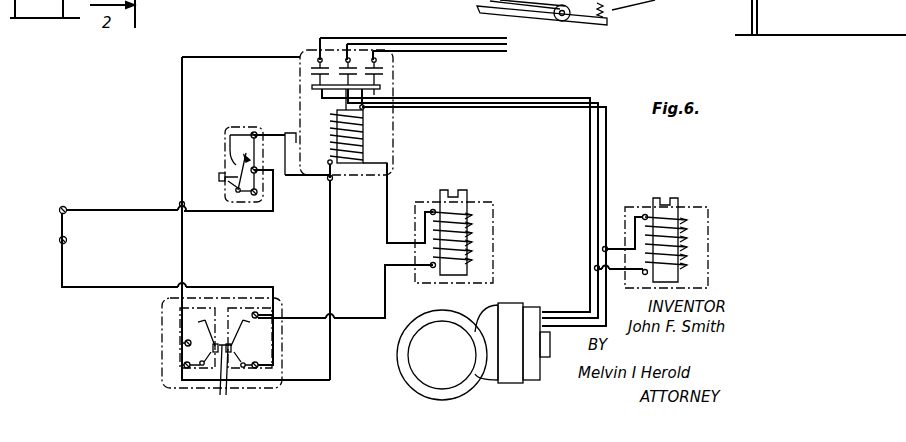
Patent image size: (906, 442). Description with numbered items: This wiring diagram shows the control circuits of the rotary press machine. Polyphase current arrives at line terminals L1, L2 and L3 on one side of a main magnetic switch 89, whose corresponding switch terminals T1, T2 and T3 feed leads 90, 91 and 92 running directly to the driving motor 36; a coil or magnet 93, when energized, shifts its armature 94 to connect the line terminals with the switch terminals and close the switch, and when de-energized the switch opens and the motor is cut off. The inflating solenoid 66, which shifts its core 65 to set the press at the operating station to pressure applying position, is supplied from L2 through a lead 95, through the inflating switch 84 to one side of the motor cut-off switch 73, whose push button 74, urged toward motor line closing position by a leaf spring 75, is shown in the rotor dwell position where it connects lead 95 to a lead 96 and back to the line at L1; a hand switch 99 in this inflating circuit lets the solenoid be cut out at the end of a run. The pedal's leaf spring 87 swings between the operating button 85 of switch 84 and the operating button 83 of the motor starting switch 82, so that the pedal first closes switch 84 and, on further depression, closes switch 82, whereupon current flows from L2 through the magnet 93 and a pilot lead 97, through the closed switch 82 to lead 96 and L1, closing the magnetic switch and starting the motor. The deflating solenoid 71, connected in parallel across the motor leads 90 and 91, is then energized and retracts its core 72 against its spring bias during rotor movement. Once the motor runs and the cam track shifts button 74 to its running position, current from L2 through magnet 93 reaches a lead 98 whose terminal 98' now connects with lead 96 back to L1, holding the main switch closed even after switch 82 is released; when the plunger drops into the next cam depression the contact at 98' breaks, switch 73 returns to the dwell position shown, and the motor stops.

The driving motor 36 is at (512, 312).
The core 65 is at (453, 200).
The inflating solenoid 66 is at (470, 243).
The deflating solenoid 71 is at (690, 236).
The core 72 is at (661, 198).
The switch 73 is at (237, 152).
The push button 74 is at (220, 176).
The leaf spring 75 is at (238, 162).
The switch 82 is at (197, 315).
The operating button 83 is at (212, 348).
The switch 84 is at (248, 338).
The operating button 85 is at (274, 359).
The leaf spring 87 is at (218, 372).
The main magnetic switch 89 is at (396, 77).
The lead 90 is at (536, 99).
The lead 91 is at (569, 104).
The lead 92 is at (588, 109).
The magnet 93 is at (364, 136).
The armature 94 is at (350, 164).
The lead 95 is at (274, 198).
The lead 96 is at (181, 93).
The pilot lead 97 is at (330, 248).
The lead 98 is at (292, 140).
The terminal 98' is at (244, 143).
The hand switch 99 is at (60, 210).
The switch terminal T1 is at (312, 88).
The switch terminal T2 is at (345, 92).
The switch terminal T3 is at (380, 88).
The line terminal L1 is at (318, 59).
The line terminal L2 is at (348, 58).
The line terminal L3 is at (376, 58).